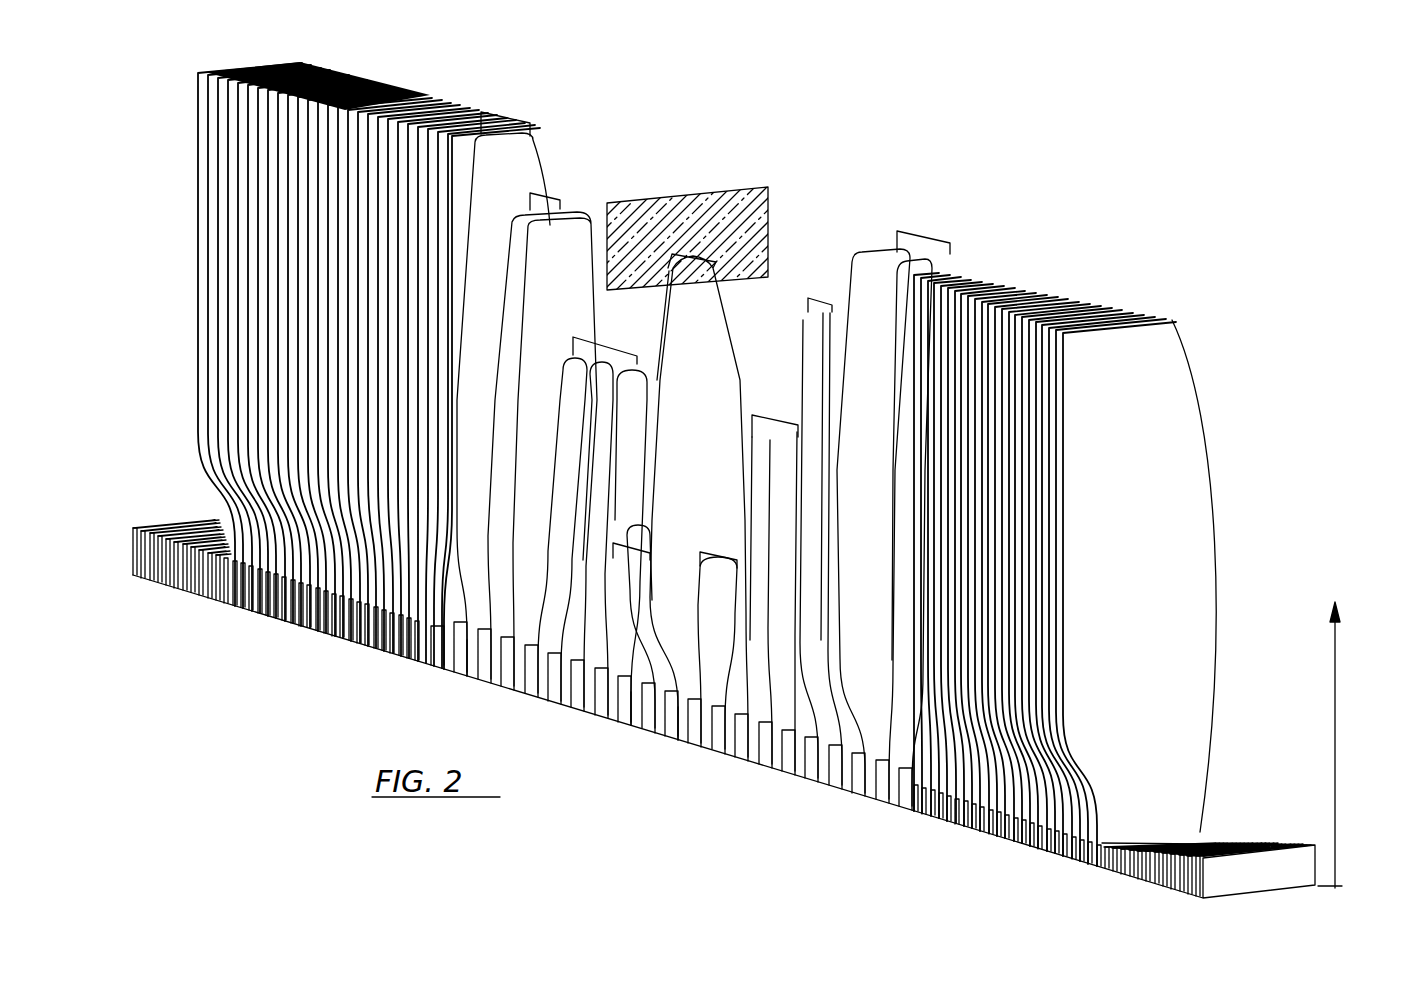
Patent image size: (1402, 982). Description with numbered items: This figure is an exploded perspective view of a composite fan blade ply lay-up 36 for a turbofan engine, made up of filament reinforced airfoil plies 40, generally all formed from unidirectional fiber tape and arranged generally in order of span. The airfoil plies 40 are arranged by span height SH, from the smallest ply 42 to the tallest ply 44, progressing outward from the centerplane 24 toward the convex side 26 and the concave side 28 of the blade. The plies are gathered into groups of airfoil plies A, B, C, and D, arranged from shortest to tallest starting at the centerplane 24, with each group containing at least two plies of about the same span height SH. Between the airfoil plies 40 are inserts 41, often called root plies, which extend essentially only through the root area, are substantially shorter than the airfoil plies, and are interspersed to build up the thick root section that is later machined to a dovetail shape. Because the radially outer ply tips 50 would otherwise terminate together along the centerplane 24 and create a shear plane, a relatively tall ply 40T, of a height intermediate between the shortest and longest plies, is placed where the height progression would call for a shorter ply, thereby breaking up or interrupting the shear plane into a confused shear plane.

The centerplane 24 is at (728, 188).
The convex side 26 is at (1168, 358).
The concave side 28 is at (200, 72).
The composite material lay-up 36 is at (258, 687).
The airfoil plies 40 is at (472, 688).
The relatively tall ply 40T is at (702, 258).
The inserts 41 is at (676, 742).
The smallest ply 42 is at (632, 728).
The tallest ply 44 is at (536, 140).
The radially outer ply tips 50 is at (563, 357).
The group of airfoil plies A is at (630, 540).
The group of airfoil plies B is at (606, 350).
The group of airfoil plies C is at (552, 203).
The group of airfoil plies D is at (508, 110).
The span height SH is at (1334, 681).